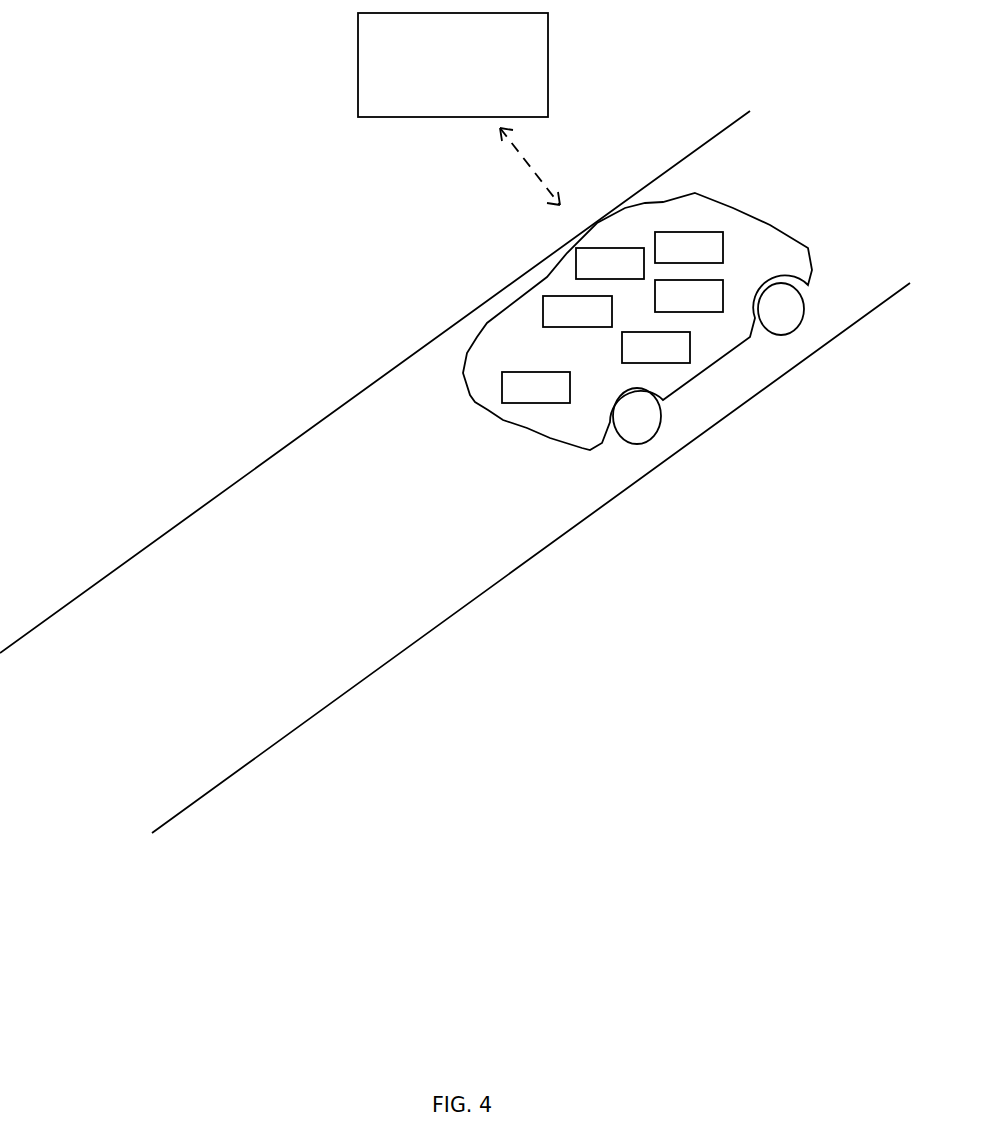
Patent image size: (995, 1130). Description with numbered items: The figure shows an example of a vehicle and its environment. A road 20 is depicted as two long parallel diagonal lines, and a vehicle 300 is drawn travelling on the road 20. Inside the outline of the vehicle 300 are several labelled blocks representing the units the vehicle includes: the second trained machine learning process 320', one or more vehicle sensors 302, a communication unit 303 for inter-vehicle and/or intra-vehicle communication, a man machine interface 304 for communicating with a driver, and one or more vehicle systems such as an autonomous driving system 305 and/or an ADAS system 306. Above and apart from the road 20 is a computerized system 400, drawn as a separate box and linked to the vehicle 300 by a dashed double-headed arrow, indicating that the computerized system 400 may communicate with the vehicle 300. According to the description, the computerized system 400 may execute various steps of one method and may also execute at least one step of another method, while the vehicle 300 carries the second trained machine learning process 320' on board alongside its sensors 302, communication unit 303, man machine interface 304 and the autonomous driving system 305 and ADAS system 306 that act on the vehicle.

The computerized system 400 is at (434, 75).
The road 20 is at (528, 270).
The vehicle 300 is at (763, 269).
The vehicle sensors 302 is at (671, 259).
The communication unit 303 is at (592, 274).
The man machine interface 304 is at (671, 306).
The autonomous driving system 305 is at (559, 322).
The ADAS system 306 is at (638, 359).
The second trained machine learning process 320' is at (536, 387).